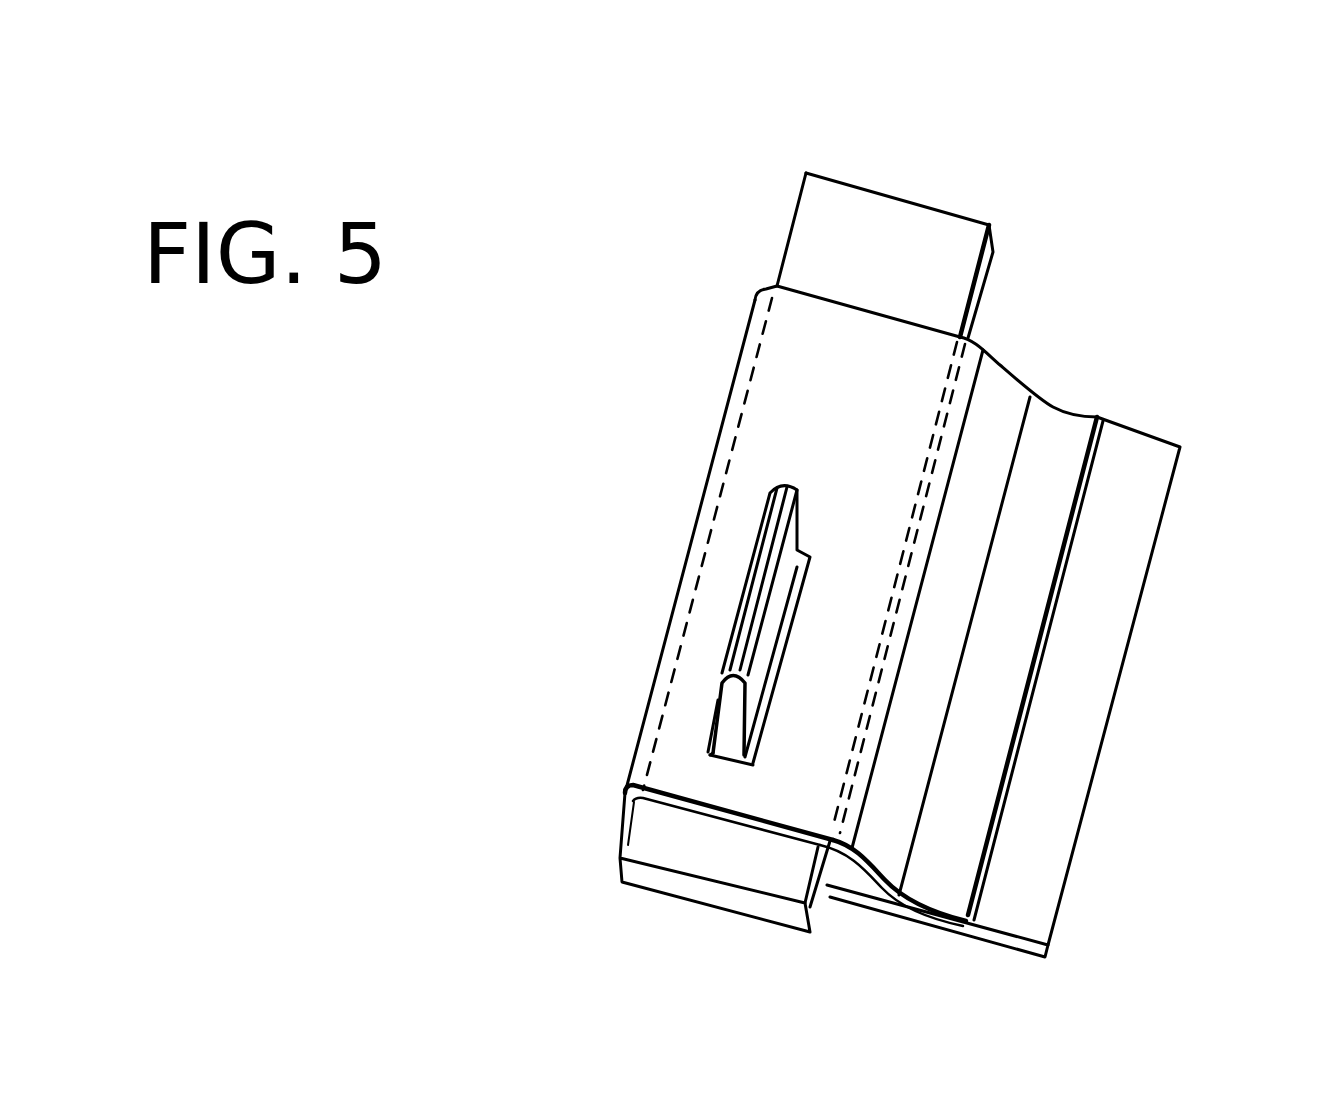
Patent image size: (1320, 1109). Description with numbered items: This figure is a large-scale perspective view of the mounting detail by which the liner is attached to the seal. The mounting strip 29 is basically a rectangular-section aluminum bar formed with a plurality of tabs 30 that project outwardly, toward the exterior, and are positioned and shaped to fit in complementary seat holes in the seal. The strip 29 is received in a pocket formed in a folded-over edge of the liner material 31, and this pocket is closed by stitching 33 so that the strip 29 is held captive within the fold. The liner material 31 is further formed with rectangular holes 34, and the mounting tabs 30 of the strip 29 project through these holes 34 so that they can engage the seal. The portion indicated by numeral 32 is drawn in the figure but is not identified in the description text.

The mounting strip 29 is at (907, 260).
The tabs 30 is at (751, 587).
The liner material 31 is at (1130, 578).
The bottom bent base portion 32 is at (852, 877).
The stitching 33 is at (1050, 443).
The rectangular holes 34 is at (712, 742).